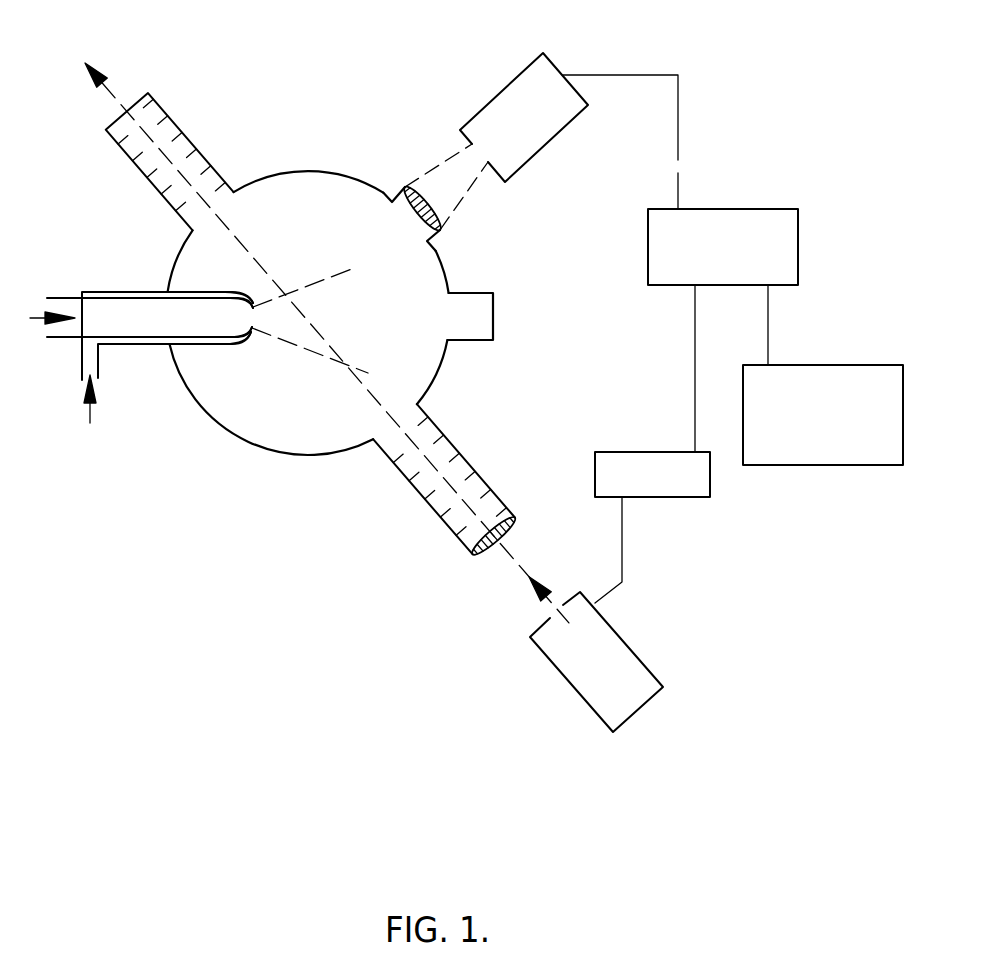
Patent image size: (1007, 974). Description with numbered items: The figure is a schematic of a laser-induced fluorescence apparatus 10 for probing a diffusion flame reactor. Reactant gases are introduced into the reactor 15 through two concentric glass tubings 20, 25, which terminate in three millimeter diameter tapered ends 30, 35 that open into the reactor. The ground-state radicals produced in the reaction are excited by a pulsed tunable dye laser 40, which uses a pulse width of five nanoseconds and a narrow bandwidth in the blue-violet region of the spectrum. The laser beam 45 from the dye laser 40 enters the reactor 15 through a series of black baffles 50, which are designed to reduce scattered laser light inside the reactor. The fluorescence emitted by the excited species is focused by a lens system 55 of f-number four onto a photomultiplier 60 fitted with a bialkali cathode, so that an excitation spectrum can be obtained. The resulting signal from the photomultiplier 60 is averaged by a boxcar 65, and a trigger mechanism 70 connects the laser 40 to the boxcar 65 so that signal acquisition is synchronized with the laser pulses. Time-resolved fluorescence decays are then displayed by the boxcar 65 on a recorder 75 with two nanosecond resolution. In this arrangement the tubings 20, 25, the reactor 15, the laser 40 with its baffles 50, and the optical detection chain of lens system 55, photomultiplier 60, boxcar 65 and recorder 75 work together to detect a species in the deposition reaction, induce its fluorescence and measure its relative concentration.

The laser-induced fluorescence apparatus 10 is at (263, 645).
The reactor 15 is at (415, 358).
The concentric glass tubing 20 is at (70, 296).
The concentric glass tubing 25 is at (100, 370).
The tapered end 30 is at (238, 337).
The tapered end 35 is at (247, 330).
The pulsed tunable dye laser 40 is at (635, 648).
The laser beam 45 is at (110, 90).
The black baffles 50 is at (188, 140).
The lens system 55 is at (443, 230).
The photomultiplier 60 is at (497, 115).
The boxcar 65 is at (783, 238).
The trigger mechanism 70 is at (648, 488).
The recorder 75 is at (800, 457).